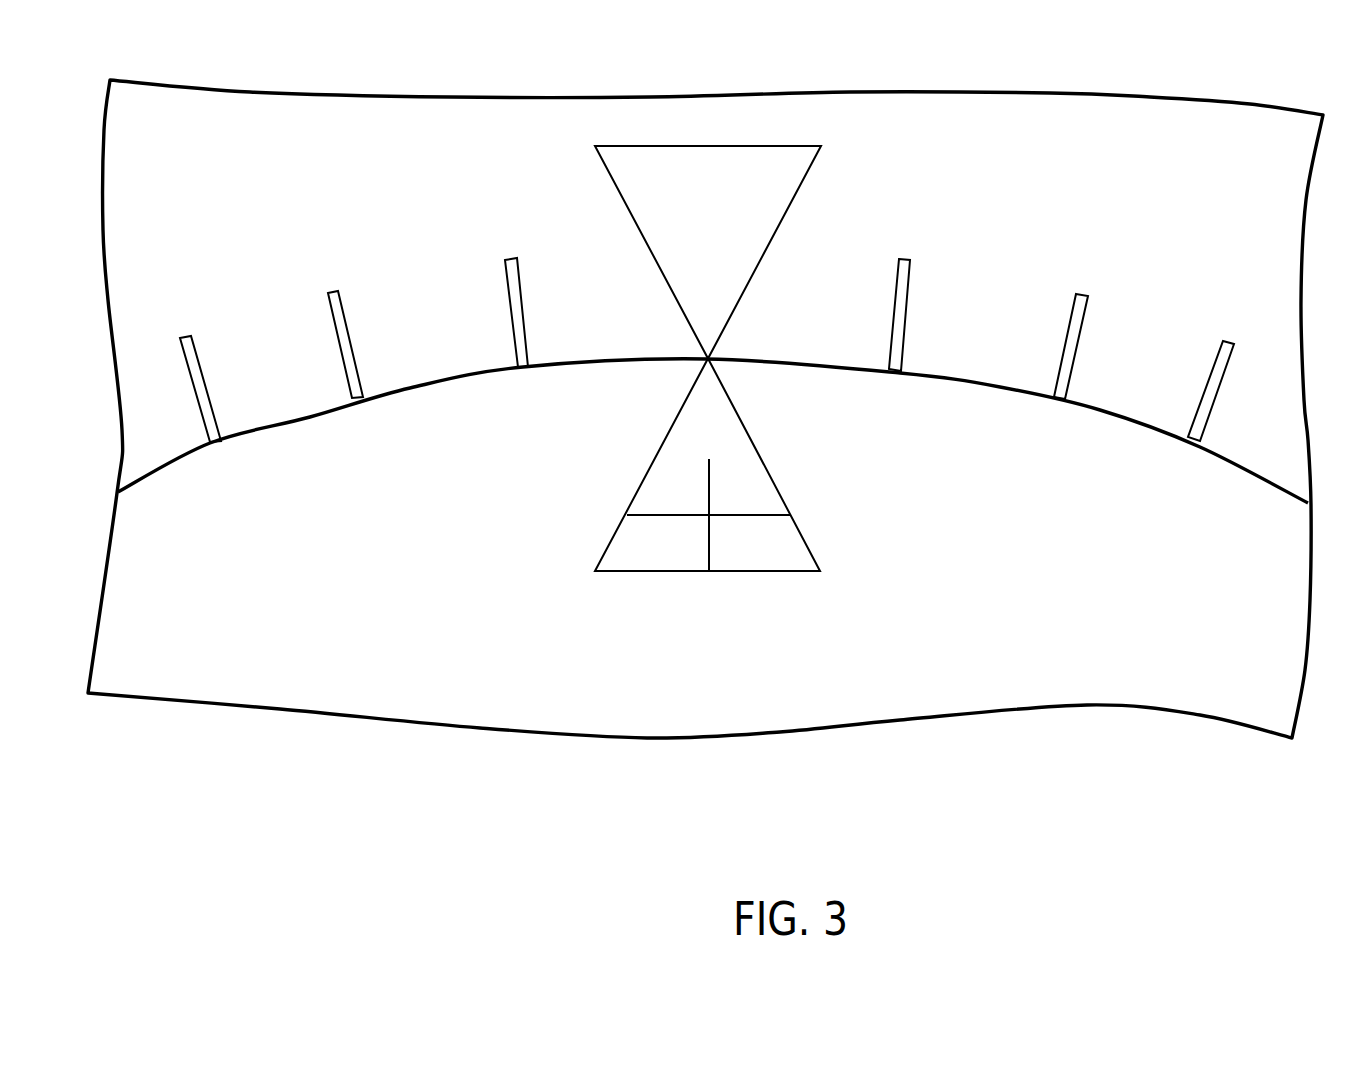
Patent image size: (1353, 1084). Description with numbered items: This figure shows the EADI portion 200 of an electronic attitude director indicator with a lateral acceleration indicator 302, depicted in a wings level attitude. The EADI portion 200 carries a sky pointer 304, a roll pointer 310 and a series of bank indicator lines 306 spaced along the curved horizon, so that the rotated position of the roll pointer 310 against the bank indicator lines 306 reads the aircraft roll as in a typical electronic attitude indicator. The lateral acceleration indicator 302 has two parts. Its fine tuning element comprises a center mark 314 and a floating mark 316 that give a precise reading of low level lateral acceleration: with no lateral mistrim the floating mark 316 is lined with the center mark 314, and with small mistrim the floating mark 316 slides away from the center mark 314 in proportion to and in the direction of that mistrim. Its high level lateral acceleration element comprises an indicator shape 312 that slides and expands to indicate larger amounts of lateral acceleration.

The EADI portion 200 is at (603, 834).
The lateral acceleration indicator 302 is at (719, 391).
The sky pointer 304 is at (794, 197).
The bank indicator lines 306 is at (205, 387).
The roll pointer 310 is at (739, 413).
The indicator shape 312 is at (808, 533).
The center mark 314 is at (709, 484).
The floating mark 316 is at (709, 549).